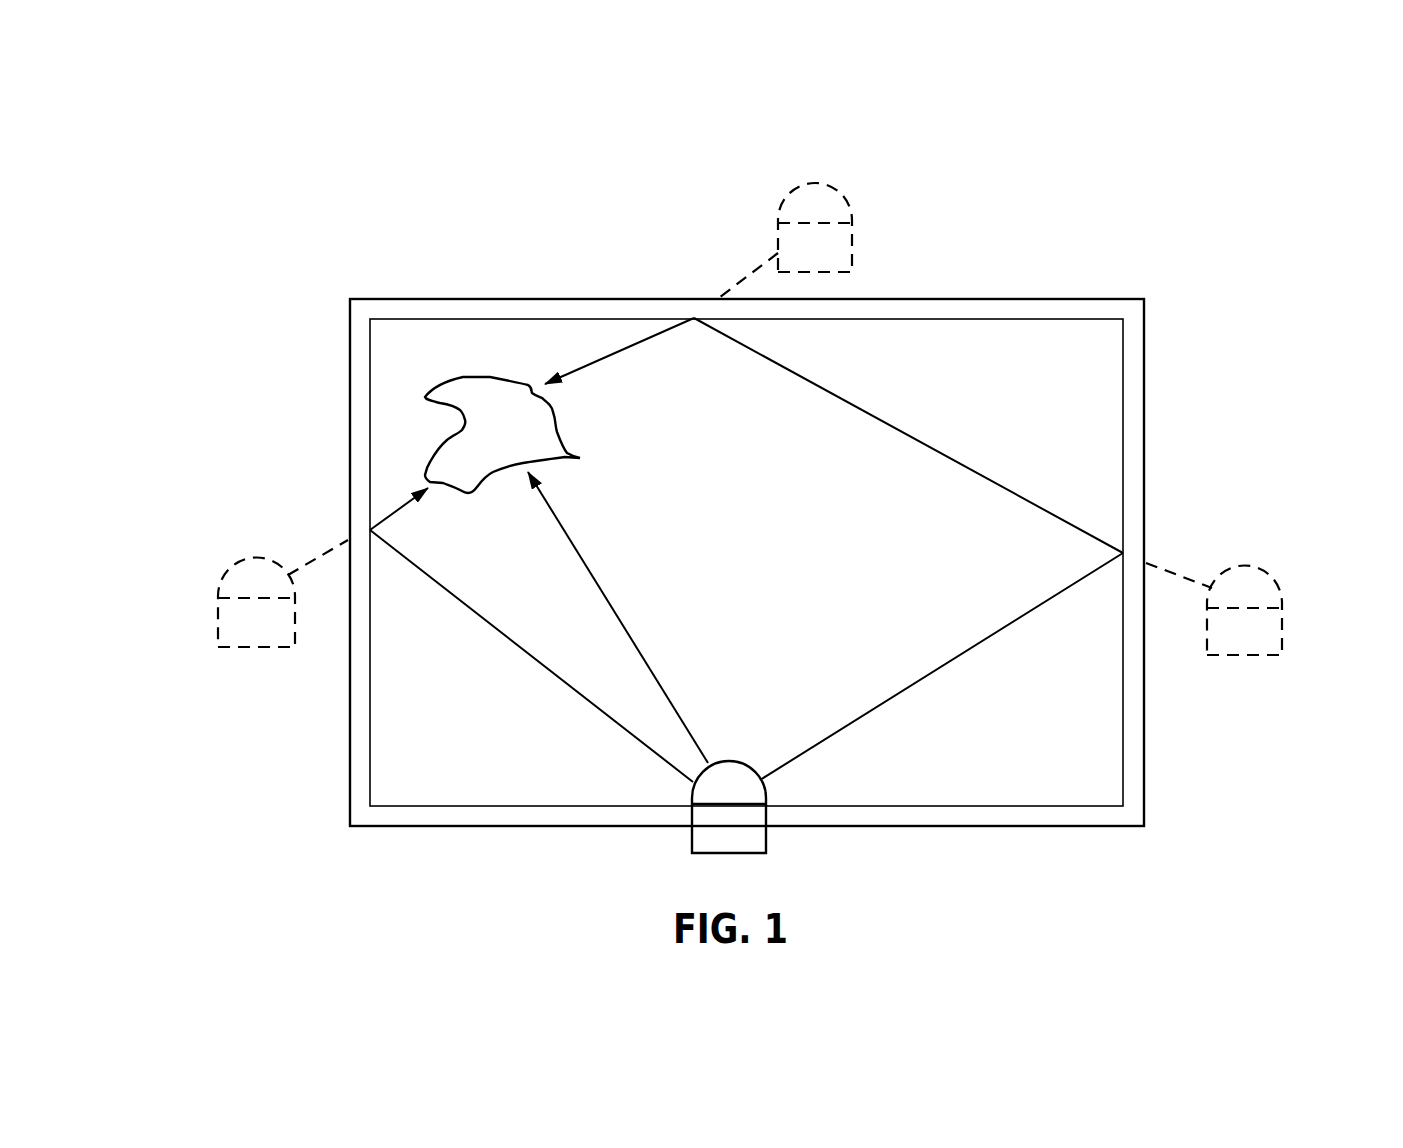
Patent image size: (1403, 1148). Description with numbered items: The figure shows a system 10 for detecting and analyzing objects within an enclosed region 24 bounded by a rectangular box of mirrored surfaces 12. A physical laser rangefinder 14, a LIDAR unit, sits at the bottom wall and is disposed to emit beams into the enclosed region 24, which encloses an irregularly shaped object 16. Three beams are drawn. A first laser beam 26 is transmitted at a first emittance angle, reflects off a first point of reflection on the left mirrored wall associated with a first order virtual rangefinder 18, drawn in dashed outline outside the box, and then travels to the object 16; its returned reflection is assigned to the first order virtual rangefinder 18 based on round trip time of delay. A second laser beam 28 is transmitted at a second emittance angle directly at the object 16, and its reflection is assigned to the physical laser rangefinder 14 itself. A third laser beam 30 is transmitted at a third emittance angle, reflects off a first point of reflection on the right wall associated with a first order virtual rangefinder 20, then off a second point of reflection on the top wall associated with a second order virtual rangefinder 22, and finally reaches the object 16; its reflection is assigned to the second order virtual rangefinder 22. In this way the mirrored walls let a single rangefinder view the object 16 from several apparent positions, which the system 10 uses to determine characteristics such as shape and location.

The system 10 is at (1148, 147).
The rectangular box of mirrored surfaces 12 is at (1008, 297).
The physical laser rangefinder 14 is at (750, 763).
The object 16 is at (580, 458).
The first order virtual rangefinder 18 is at (262, 558).
The first order virtual rangefinder 20 is at (1260, 572).
The second order virtual rangefinder 22 is at (827, 182).
The enclosed region 24 is at (746, 562).
The first laser beam 26 is at (485, 617).
The second laser beam 28 is at (590, 570).
The third laser beam 30 is at (940, 668).